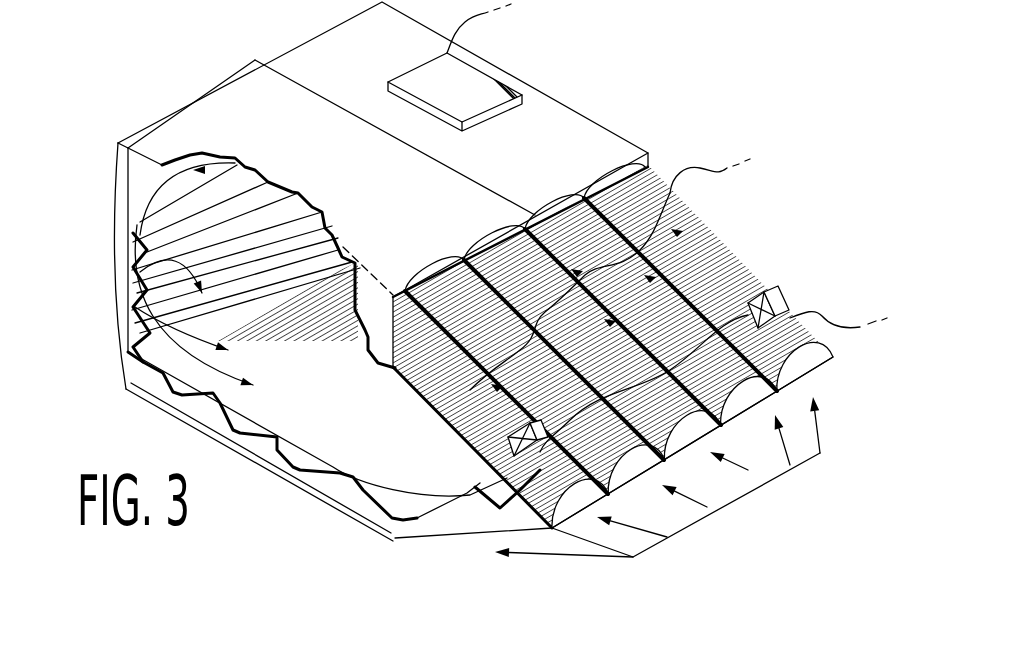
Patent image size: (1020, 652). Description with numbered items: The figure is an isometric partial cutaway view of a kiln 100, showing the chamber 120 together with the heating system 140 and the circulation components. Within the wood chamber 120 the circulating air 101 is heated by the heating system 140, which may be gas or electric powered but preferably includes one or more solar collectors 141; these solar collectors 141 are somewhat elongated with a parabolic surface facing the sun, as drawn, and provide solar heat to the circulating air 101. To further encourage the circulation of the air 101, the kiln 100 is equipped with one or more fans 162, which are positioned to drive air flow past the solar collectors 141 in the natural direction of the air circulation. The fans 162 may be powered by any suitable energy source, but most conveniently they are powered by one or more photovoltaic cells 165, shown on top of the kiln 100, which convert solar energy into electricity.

The kiln 100 is at (790, 124).
The circulating air 101 is at (187, 172).
The chamber 120 is at (358, 410).
The heating system 140 is at (727, 257).
The solar collectors 141 is at (835, 357).
The fans 162 is at (552, 530).
The photovoltaic cells 165 is at (518, 92).